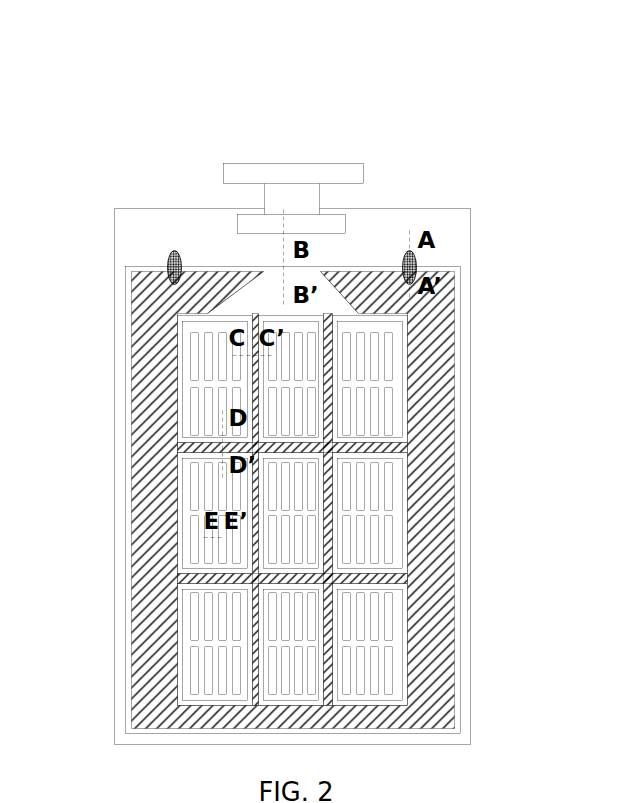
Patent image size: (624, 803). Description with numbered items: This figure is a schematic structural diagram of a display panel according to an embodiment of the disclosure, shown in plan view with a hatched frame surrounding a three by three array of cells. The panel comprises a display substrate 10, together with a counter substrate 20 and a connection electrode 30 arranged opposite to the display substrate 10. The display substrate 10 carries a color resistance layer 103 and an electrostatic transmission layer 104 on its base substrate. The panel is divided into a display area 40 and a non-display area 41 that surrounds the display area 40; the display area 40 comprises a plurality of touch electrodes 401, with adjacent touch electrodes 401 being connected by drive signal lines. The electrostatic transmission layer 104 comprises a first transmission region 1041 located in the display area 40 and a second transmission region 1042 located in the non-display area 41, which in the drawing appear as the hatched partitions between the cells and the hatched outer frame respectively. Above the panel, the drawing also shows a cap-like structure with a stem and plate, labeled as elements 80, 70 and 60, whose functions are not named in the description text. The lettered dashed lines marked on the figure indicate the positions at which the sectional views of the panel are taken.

The display substrate 10 is at (356, 463).
The counter substrate 20 is at (347, 427).
The connection electrode 30 is at (486, 177).
The display area 40 is at (112, 261).
The non-display area 41 is at (215, 225).
The connecting plate 60 is at (404, 125).
The connecting stem 70 is at (279, 117).
The top cap 80 is at (253, 113).
The color resistance layer 103 is at (383, 511).
The electrostatic transmission layer 104 is at (360, 498).
The touch electrode 401 is at (460, 379).
The first transmission region 1041 is at (388, 513).
The second transmission region 1042 is at (426, 510).